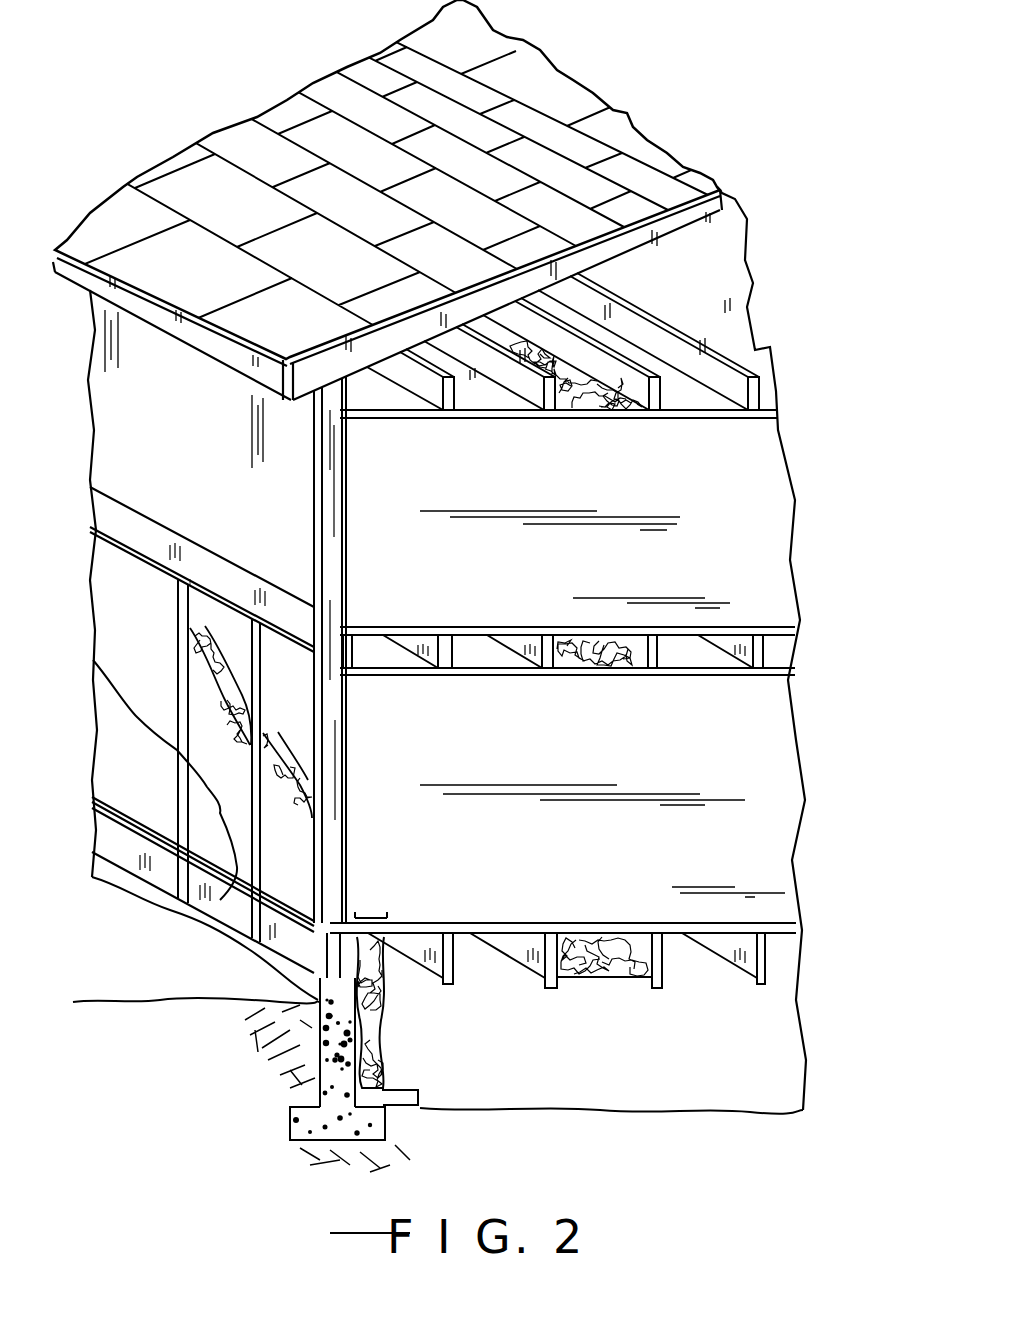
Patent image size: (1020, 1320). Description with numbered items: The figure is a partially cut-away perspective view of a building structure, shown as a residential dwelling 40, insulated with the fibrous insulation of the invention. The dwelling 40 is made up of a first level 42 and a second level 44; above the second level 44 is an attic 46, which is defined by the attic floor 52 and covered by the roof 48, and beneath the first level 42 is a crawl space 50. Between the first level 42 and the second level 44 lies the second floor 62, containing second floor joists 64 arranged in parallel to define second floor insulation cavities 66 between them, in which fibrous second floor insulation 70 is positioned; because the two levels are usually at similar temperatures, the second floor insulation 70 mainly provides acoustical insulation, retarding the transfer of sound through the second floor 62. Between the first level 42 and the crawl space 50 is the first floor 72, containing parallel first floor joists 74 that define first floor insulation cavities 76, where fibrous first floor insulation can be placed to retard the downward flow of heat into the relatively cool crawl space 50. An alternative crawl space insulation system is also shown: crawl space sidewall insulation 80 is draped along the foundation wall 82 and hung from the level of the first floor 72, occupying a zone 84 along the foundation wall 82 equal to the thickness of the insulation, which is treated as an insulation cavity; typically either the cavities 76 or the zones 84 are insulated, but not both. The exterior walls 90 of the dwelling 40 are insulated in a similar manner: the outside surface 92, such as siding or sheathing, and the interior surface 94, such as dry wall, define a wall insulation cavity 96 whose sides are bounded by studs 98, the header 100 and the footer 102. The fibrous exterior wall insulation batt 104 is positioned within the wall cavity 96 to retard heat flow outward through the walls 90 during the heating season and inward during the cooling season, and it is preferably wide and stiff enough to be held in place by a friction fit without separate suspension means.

The residential dwelling 40 is at (716, 134).
The first level 42 is at (735, 752).
The second level 44 is at (739, 500).
The attic 46 is at (703, 302).
The roof 48 is at (548, 98).
The crawl space 50 is at (763, 1010).
The attic floor 52 is at (738, 358).
The second floor 62 is at (736, 624).
The second floor joists 64 is at (657, 657).
The second floor insulation cavities 66 is at (480, 627).
The second floor insulation 70 is at (602, 627).
The first floor 72 is at (722, 925).
The first floor joists 74 is at (480, 933).
The first floor insulation cavities 76 is at (505, 970).
The crawl space sidewall insulation 80 is at (612, 935).
The foundation wall 82 is at (385, 1047).
The insulation zone 84 is at (372, 917).
The exterior wall 90 is at (167, 806).
The outside surface 92 is at (140, 723).
The interior surface 94 is at (300, 648).
The wall insulation cavity 96 is at (223, 612).
The studs 98 is at (192, 616).
The header 100 is at (118, 502).
The footer 102 is at (283, 903).
The exterior wall insulation batt 104 is at (340, 757).